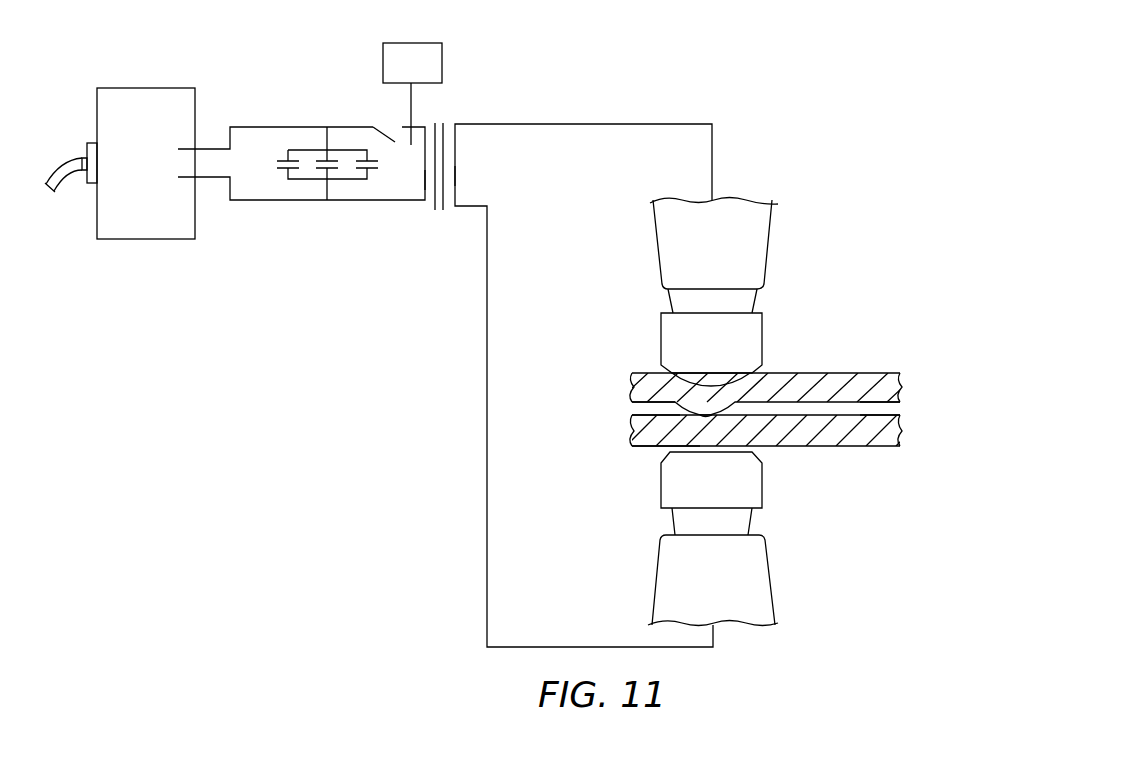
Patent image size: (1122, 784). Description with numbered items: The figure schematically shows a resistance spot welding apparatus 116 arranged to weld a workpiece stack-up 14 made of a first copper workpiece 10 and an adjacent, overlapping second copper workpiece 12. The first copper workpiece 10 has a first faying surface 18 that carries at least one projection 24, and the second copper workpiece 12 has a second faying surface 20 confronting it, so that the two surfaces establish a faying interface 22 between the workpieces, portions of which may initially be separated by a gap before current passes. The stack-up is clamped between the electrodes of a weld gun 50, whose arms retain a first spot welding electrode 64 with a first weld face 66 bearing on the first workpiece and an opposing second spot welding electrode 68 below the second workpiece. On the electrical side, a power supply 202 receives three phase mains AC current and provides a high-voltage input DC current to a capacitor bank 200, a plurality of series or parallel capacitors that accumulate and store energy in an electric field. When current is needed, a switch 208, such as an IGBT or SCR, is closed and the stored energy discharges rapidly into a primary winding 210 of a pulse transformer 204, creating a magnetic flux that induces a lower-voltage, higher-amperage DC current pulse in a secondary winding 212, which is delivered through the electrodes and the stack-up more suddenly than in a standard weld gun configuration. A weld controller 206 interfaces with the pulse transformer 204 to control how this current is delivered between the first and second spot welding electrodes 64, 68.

The first copper workpiece 10 is at (647, 367).
The second copper workpiece 12 is at (647, 452).
The workpiece stack-up 14 is at (910, 409).
The first faying surface 18 is at (768, 411).
The second faying surface 20 is at (825, 412).
The faying interface 22 is at (625, 409).
The projection 24 is at (731, 404).
The weld gun 50 is at (783, 182).
The first spot welding electrode 64 is at (678, 340).
The first weld face 66 is at (708, 383).
The second spot welding electrode 68 is at (688, 480).
The resistance spot welding apparatus 116 is at (628, 116).
The capacitor bank 200 is at (340, 208).
The power supply 202 is at (147, 223).
The pulse transformer 204 is at (438, 227).
The weld controller 206 is at (431, 77).
The switch 208 is at (393, 138).
The primary winding 210 is at (424, 180).
The secondary winding 212 is at (455, 176).